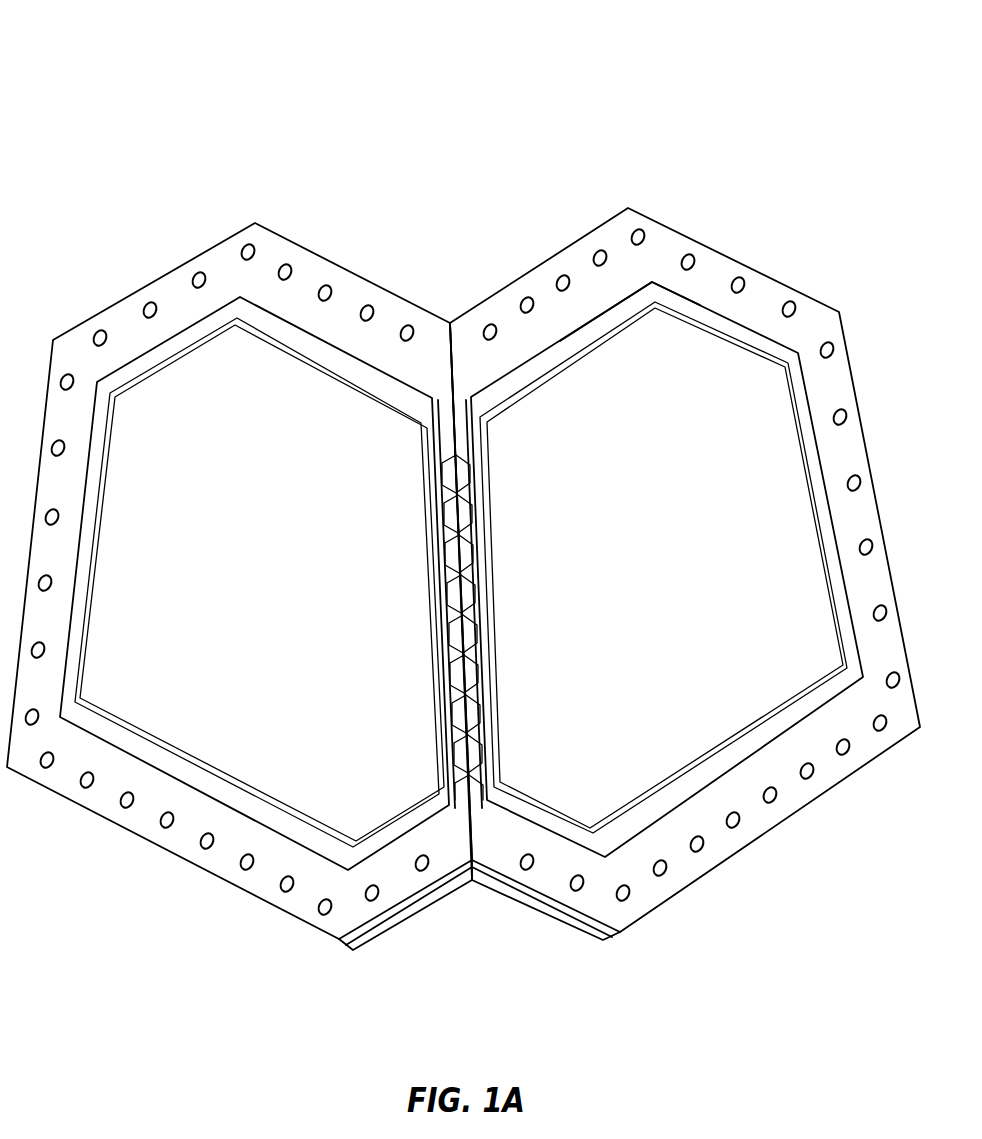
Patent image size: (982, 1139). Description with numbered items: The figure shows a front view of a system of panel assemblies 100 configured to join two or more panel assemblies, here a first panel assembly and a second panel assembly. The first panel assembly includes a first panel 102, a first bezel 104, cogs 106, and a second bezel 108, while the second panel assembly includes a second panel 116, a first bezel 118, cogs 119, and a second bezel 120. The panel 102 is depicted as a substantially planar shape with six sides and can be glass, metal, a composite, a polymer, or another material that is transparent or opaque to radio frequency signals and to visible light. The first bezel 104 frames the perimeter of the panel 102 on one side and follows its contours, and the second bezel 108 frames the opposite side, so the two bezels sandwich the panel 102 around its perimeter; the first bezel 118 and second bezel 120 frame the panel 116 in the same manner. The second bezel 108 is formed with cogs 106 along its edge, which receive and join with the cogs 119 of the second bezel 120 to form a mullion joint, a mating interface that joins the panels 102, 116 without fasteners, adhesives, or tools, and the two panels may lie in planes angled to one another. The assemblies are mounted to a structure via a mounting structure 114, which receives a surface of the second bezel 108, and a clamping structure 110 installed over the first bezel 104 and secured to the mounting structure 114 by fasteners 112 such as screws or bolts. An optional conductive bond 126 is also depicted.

The system of panel assemblies 100 is at (209, 74).
The first panel 102 is at (547, 410).
The first bezel 104 is at (563, 343).
The cogs 106 is at (463, 483).
The second bezel 108 is at (463, 412).
The clamping structure 110 is at (665, 245).
The fasteners 112 is at (745, 278).
The mounting structure 114 is at (382, 920).
The second panel 116 is at (252, 360).
The first bezel 118 is at (208, 327).
The cogs 119 is at (455, 600).
The second bezel 120 is at (452, 427).
The conductive bond 126 is at (636, 310).